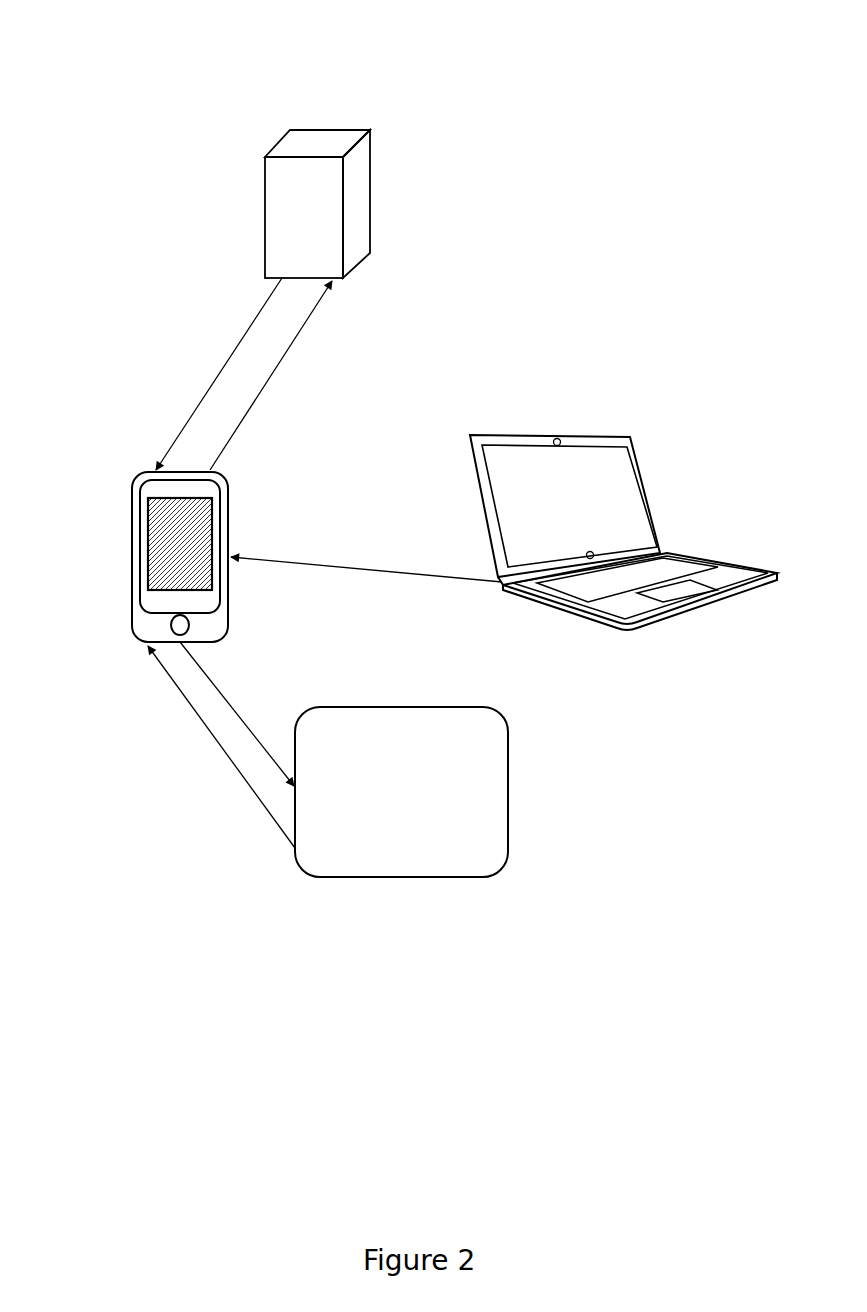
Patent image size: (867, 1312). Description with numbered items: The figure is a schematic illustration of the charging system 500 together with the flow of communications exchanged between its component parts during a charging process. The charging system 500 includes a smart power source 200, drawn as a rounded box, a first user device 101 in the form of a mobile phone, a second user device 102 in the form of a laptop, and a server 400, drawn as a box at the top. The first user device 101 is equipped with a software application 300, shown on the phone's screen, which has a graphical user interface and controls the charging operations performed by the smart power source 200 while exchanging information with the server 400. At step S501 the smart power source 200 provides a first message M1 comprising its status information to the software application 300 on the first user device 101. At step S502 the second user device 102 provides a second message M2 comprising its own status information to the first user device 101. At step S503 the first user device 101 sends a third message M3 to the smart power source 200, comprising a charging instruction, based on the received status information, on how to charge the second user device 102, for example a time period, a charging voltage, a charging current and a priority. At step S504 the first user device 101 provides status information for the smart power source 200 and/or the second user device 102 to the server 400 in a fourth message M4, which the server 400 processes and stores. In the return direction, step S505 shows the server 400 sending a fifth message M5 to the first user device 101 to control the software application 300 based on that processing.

The charging system 500 is at (742, 108).
The server 400 is at (333, 133).
The first user device 101 is at (132, 497).
The software application 300 is at (148, 568).
The second user device 102 is at (640, 460).
The smart power source 200 is at (508, 807).
The first message M1 is at (253, 792).
The second message M2 is at (387, 570).
The third message M3 is at (265, 748).
The fourth message M4 is at (273, 375).
The fifth message M5 is at (213, 385).
The step of providing first message S501 is at (221, 747).
The step of providing second message S502 is at (366, 552).
The step of sending third message S503 is at (237, 714).
The step of providing fourth message S504 is at (294, 375).
The step of sending fifth message S505 is at (219, 374).